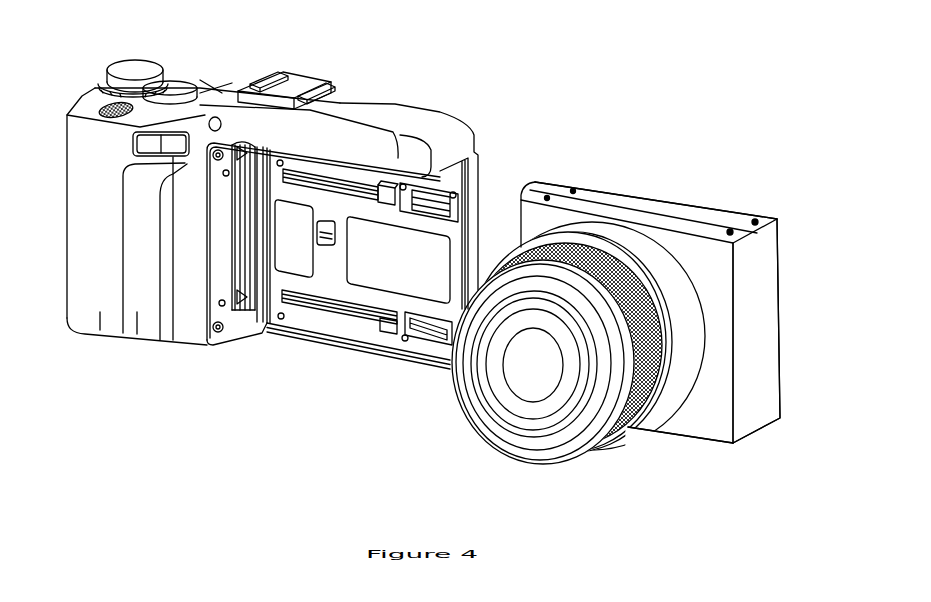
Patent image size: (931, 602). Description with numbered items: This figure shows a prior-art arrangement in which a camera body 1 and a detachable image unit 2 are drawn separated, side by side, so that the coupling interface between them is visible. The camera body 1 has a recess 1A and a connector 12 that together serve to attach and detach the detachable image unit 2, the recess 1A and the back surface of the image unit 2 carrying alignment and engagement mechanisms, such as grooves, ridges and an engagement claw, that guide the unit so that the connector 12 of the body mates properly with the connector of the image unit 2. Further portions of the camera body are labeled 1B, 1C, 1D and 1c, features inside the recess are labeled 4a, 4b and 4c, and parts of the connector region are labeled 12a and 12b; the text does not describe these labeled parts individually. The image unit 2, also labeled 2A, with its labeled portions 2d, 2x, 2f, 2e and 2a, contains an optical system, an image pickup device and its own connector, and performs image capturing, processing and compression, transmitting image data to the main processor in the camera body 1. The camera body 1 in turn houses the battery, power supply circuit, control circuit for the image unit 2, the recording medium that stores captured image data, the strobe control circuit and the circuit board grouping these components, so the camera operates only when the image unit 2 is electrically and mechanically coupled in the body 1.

The camera body 1 is at (418, 52).
The camera body 1C is at (82, 233).
The grip portion 1D is at (443, 118).
The side cover 1B is at (481, 171).
The recess 1A is at (329, 333).
The body side portion 1c is at (137, 310).
The upper guide rail 4a is at (341, 192).
The connector frame 4b is at (441, 187).
The lock switch 4c is at (390, 208).
The connector 12 is at (233, 215).
The hinge screw 12a is at (238, 142).
The hinge fixing screw 12b is at (227, 235).
The detachable image unit 2 is at (702, 192).
The lens unit housing 2A is at (664, 317).
The top plate 2d is at (676, 203).
The screw 2x is at (697, 230).
The side face 2f is at (771, 298).
The bottom face 2e is at (691, 438).
The front face 2a is at (720, 427).